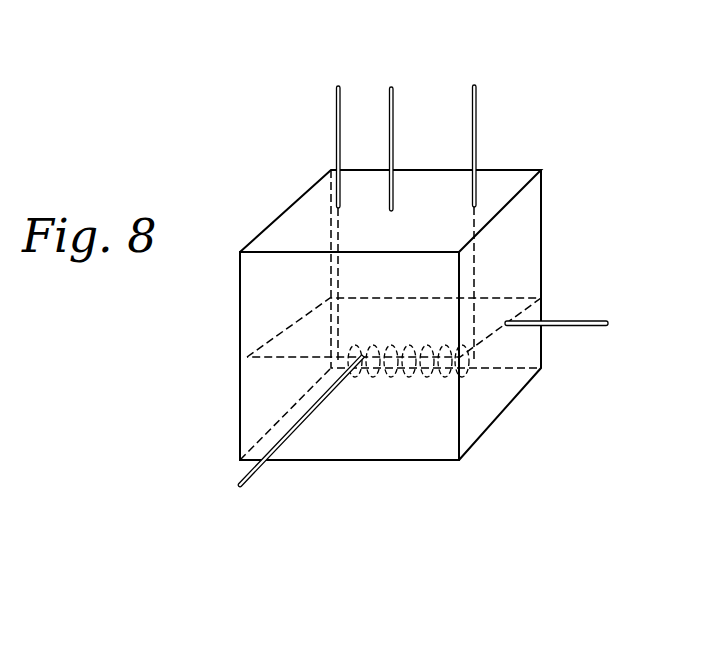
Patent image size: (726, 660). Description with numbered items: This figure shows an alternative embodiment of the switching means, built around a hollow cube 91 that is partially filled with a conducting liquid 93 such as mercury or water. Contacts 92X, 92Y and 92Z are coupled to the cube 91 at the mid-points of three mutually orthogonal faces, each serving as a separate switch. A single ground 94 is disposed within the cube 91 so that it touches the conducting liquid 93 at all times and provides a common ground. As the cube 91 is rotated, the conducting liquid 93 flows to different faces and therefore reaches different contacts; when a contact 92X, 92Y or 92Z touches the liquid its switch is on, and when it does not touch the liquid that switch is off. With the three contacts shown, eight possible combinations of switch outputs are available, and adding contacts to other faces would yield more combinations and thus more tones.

The hollow cube 91 is at (543, 200).
The contact 92X is at (590, 320).
The contact 92Y is at (393, 97).
The contact 92Z is at (301, 443).
The conducting liquid 93 is at (287, 342).
The ground 94 is at (337, 98).